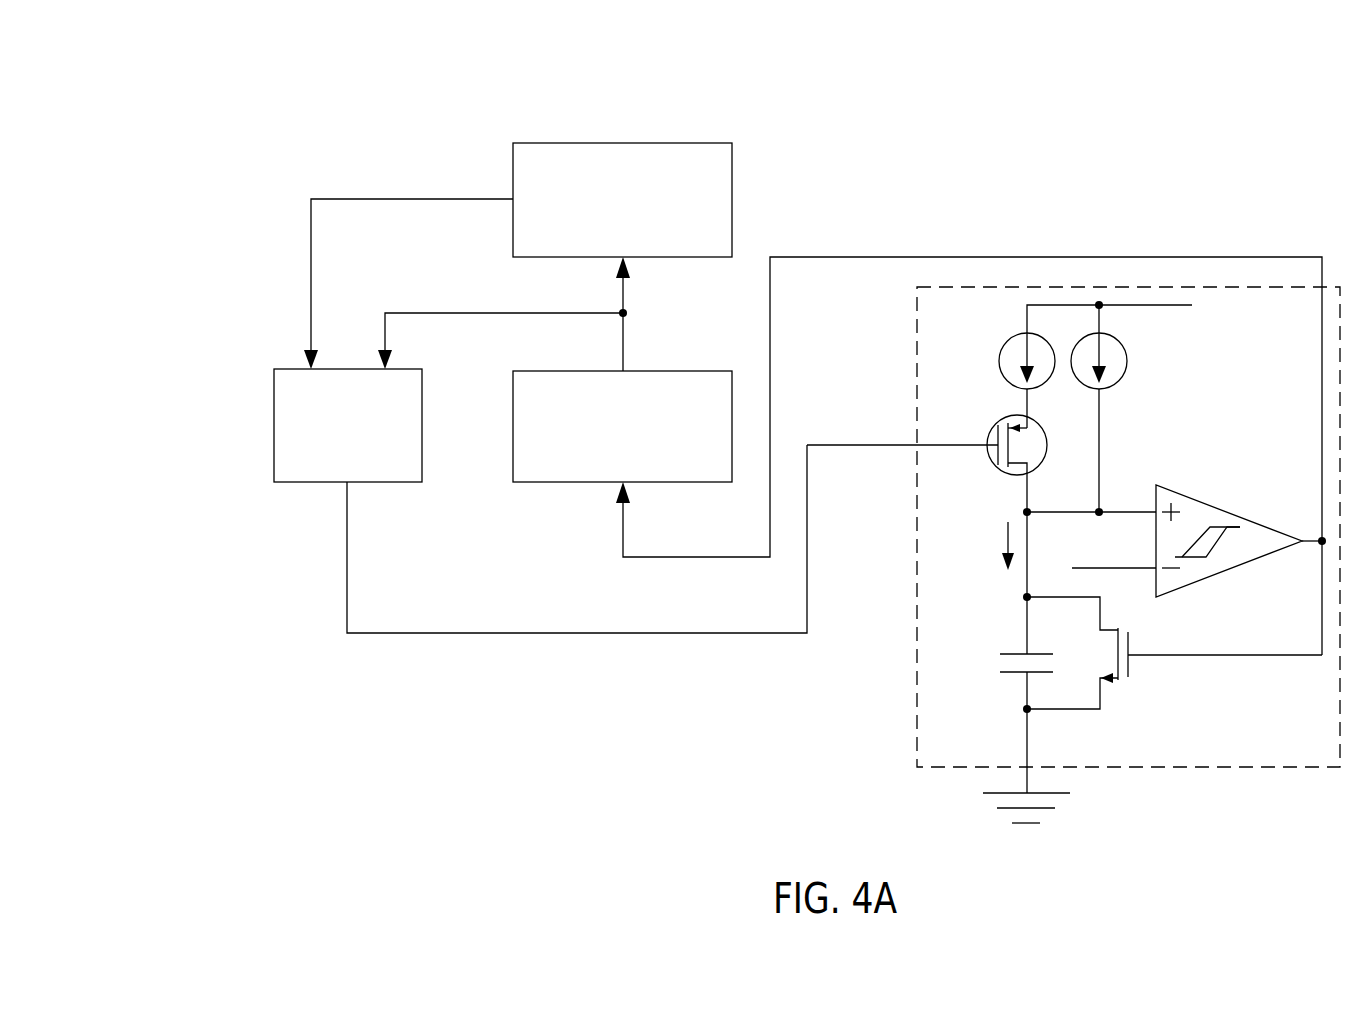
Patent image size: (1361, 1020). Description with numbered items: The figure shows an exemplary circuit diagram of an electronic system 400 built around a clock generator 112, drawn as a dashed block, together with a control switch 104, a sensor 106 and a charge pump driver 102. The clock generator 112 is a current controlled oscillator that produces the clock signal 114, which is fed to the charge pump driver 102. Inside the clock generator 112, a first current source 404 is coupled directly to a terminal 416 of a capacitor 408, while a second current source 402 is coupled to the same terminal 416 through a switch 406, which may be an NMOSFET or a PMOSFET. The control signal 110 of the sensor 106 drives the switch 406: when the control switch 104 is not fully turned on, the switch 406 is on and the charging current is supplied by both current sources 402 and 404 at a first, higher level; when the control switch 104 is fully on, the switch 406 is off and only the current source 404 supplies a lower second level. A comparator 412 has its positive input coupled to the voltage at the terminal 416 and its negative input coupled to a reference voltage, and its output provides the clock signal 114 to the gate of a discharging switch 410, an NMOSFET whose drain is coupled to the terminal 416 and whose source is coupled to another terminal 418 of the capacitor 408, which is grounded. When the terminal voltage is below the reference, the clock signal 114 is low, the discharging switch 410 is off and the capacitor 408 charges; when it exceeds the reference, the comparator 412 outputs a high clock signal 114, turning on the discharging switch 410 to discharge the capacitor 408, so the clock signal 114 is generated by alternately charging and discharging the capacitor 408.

The electronic system 400 is at (300, 138).
The charge pump driver 102 is at (643, 472).
The control switch 104 is at (643, 231).
The sensor 106 is at (368, 452).
The control signal 110 is at (896, 444).
The clock generator 112 is at (915, 620).
The clock signal 114 is at (622, 530).
The second current source 402 is at (1003, 352).
The first current source 404 is at (1122, 352).
The switch 406 is at (999, 465).
The capacitor 408 is at (1009, 675).
The discharging switch 410 is at (1131, 641).
The comparator 412 is at (1211, 503).
The terminal 416 is at (1025, 599).
The another terminal 418 is at (1030, 712).